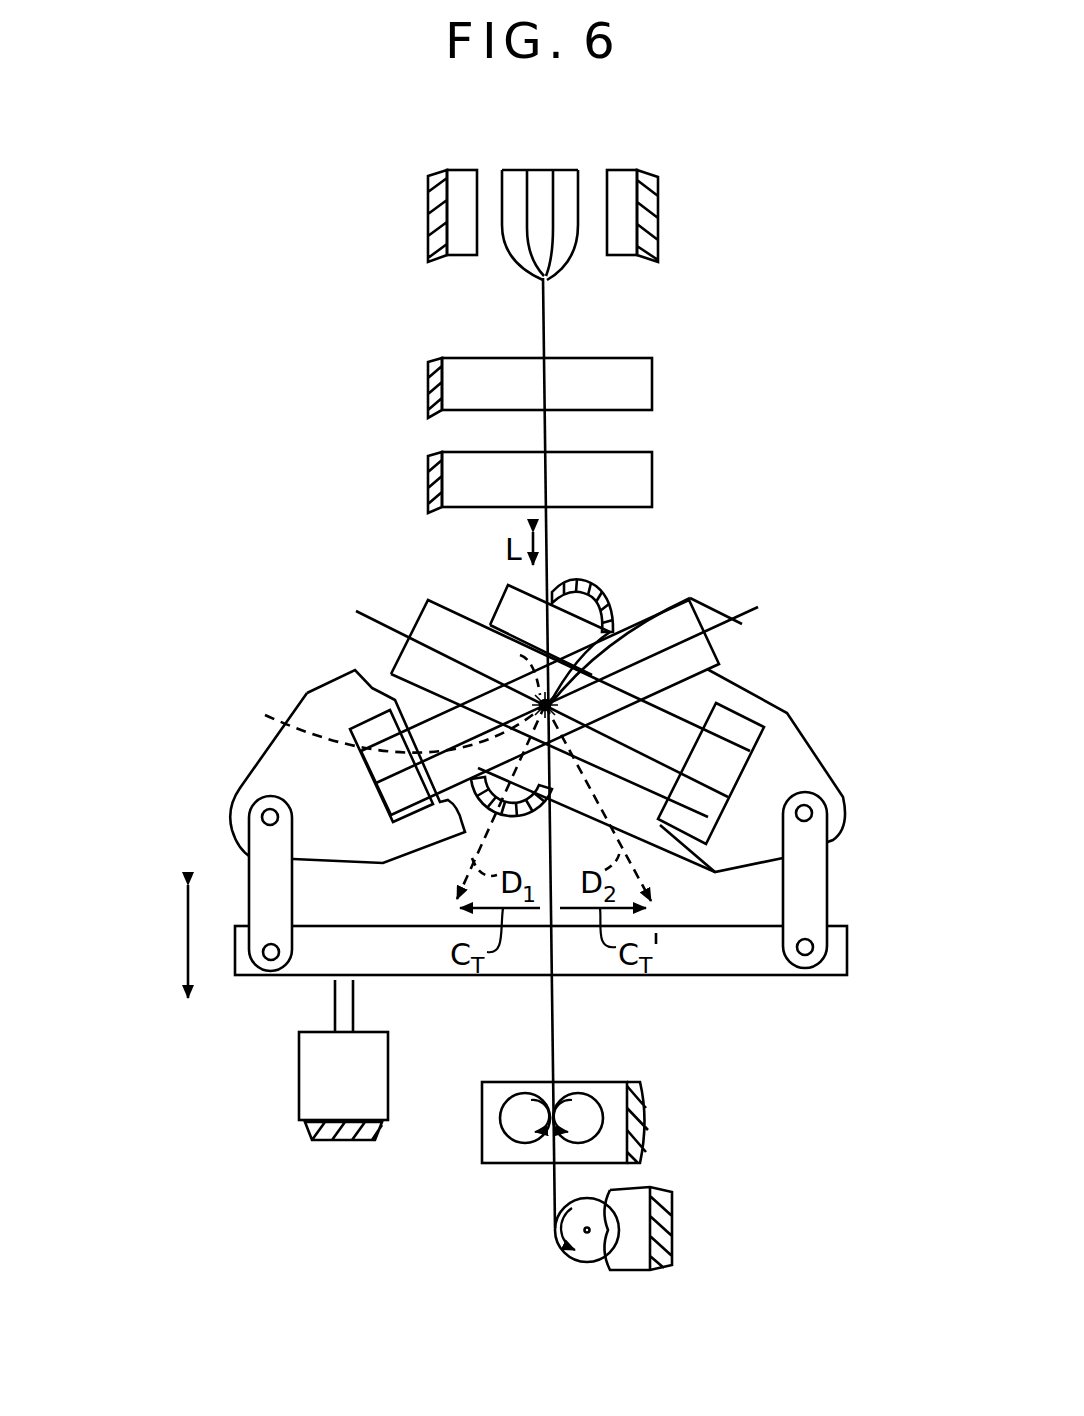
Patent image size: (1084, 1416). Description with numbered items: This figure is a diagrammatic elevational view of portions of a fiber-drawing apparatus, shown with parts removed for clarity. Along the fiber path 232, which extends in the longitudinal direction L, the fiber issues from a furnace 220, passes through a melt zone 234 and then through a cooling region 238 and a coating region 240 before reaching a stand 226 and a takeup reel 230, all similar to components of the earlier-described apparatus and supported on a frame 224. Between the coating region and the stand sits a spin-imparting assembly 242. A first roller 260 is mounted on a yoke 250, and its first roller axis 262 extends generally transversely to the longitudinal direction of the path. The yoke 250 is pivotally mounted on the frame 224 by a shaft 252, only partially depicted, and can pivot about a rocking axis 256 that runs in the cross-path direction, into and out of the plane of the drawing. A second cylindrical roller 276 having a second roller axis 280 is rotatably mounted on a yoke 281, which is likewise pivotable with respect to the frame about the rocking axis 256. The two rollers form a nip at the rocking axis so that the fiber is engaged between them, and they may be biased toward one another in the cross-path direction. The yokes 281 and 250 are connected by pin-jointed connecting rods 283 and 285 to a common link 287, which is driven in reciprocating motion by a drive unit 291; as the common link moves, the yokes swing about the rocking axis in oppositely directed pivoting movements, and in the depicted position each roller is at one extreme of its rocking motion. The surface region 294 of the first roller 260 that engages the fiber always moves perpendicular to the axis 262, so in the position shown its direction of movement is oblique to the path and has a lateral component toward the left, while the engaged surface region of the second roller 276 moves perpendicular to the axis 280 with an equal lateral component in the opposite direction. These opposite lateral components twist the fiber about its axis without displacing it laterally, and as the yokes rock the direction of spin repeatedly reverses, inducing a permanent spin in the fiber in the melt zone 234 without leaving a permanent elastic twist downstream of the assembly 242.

The furnace 220 is at (612, 158).
The frame 224 is at (428, 470).
The stand 226 is at (625, 1072).
The takeup reel 230 is at (590, 1253).
The fiber path 232 is at (548, 536).
The melt zone 234 is at (552, 318).
The cooling region 238 is at (652, 380).
The coating region 240 is at (652, 478).
The spin-imparting assembly 242 is at (318, 614).
The yoke 250 is at (737, 688).
The shaft 252 is at (603, 594).
The rocking axis 256 is at (688, 602).
The first roller 260 is at (447, 588).
The first roller axis 262 is at (393, 633).
The second cylindrical roller 276 is at (443, 770).
The second roller axis 280 is at (377, 726).
The yoke 281 is at (228, 820).
The connecting rod 283 is at (250, 877).
The connecting rod 285 is at (822, 887).
The common link 287 is at (757, 965).
The drive unit 291 is at (300, 1083).
The surface region 294 is at (520, 655).